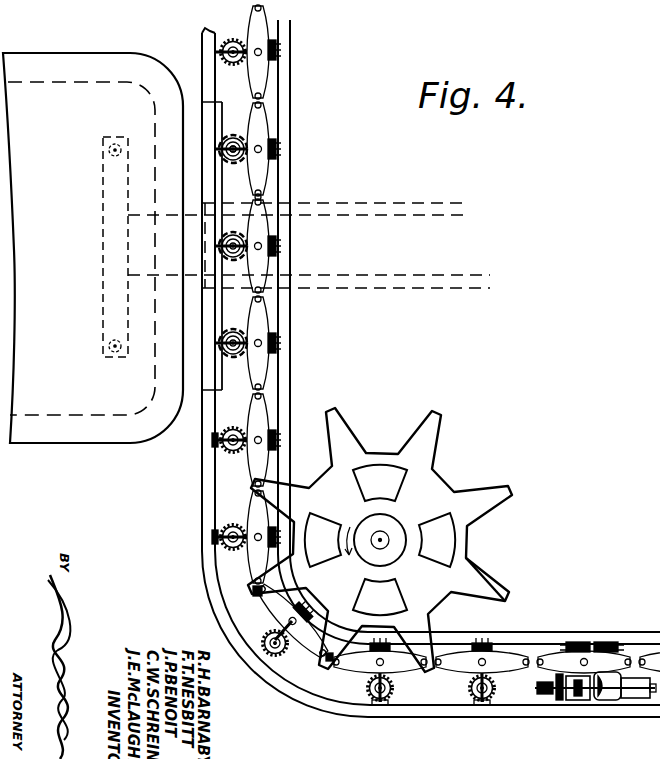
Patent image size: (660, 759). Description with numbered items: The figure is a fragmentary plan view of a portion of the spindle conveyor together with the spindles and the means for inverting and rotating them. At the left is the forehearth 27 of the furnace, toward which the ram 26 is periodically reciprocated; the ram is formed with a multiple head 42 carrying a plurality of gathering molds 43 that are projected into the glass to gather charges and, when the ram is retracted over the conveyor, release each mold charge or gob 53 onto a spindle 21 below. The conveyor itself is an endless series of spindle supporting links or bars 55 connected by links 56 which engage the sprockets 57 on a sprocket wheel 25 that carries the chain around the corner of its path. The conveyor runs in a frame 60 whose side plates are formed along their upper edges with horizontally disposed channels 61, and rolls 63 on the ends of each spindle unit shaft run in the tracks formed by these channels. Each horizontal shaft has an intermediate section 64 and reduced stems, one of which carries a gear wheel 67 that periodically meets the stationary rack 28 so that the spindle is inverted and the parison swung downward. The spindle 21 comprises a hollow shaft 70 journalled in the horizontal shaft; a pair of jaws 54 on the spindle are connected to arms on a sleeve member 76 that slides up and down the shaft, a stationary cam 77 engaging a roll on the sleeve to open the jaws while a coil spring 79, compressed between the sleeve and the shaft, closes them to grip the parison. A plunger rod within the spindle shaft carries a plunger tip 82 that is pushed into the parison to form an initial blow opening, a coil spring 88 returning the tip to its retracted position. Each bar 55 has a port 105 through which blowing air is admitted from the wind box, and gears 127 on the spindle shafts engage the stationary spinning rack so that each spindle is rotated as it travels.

The spindle 21 is at (232, 68).
The sprocket wheel 25 is at (464, 537).
The ram 26 is at (398, 214).
The forehearth 27 is at (79, 456).
The stationary rack 28 is at (604, 646).
The multiple head 42 is at (93, 209).
The gathering mold 43 is at (110, 150).
The mold charge or gob (parison) 53 is at (245, 430).
The jaws 54 is at (246, 142).
The spindle supporting link or bar 55 is at (262, 131).
The link 56 is at (262, 203).
The sprocket 57 is at (497, 588).
The frame 60 is at (550, 728).
The channel 61 is at (205, 62).
The roll 63 is at (216, 462).
The intermediate section 64 is at (593, 702).
The gear wheel 67 is at (281, 49).
The hollow shaft 70 is at (575, 701).
The sleeve member 76 is at (620, 700).
The stationary cam 77 is at (216, 318).
The coil spring 79 is at (594, 683).
The plunger tip 82 is at (242, 164).
The coil spring 88 is at (541, 690).
The port 105 is at (461, 688).
The gear 127 is at (234, 520).